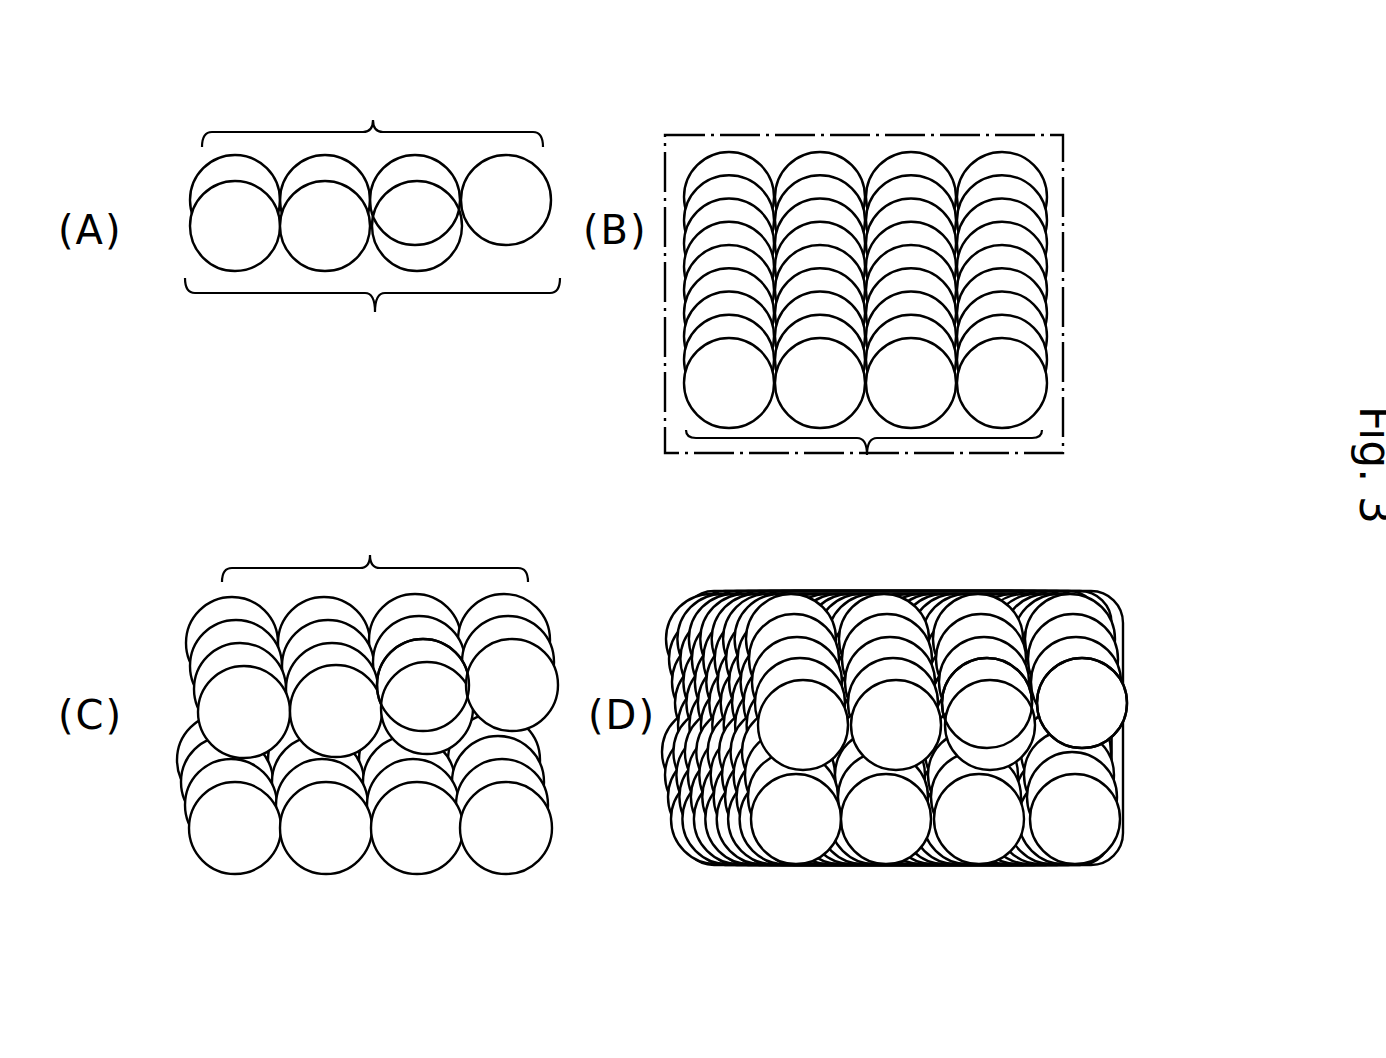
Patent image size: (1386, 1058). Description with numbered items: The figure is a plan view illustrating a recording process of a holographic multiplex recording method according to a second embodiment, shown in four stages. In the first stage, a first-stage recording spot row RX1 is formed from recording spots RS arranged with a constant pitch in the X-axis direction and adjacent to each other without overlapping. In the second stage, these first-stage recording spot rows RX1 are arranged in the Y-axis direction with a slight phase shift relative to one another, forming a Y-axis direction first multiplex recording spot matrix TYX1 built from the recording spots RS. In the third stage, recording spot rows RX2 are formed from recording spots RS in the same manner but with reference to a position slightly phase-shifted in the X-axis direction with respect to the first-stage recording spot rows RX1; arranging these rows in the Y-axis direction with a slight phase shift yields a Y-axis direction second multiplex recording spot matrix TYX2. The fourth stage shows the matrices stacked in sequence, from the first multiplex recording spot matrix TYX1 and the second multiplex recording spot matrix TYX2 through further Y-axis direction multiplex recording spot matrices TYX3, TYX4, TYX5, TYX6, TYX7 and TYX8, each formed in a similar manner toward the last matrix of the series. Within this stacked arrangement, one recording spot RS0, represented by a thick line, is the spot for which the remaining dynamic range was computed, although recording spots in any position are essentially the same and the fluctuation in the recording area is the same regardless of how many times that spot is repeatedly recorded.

The first-stage recording spot row RX1 is at (372, 120).
The recording spot RS is at (209, 172).
The Y-axis direction first multiplex recording spot matrix TYX1 is at (699, 134).
The recording spot row RX2 is at (369, 555).
The Y-axis direction second multiplex recording spot matrix TYX2 is at (730, 589).
The Y-axis direction multiplex recording spot matrix TYX3 is at (748, 589).
The Y-axis direction multiplex recording spot matrix TYX4 is at (762, 589).
The Y-axis direction multiplex recording spot matrix TYX5 is at (937, 589).
The Y-axis direction multiplex recording spot matrix TYX6 is at (953, 589).
The Y-axis direction multiplex recording spot matrix TYX7 is at (1049, 589).
The Y-axis direction multiplex recording spot matrix TYX8 is at (1081, 589).
The recording spot RS0 is at (1107, 735).